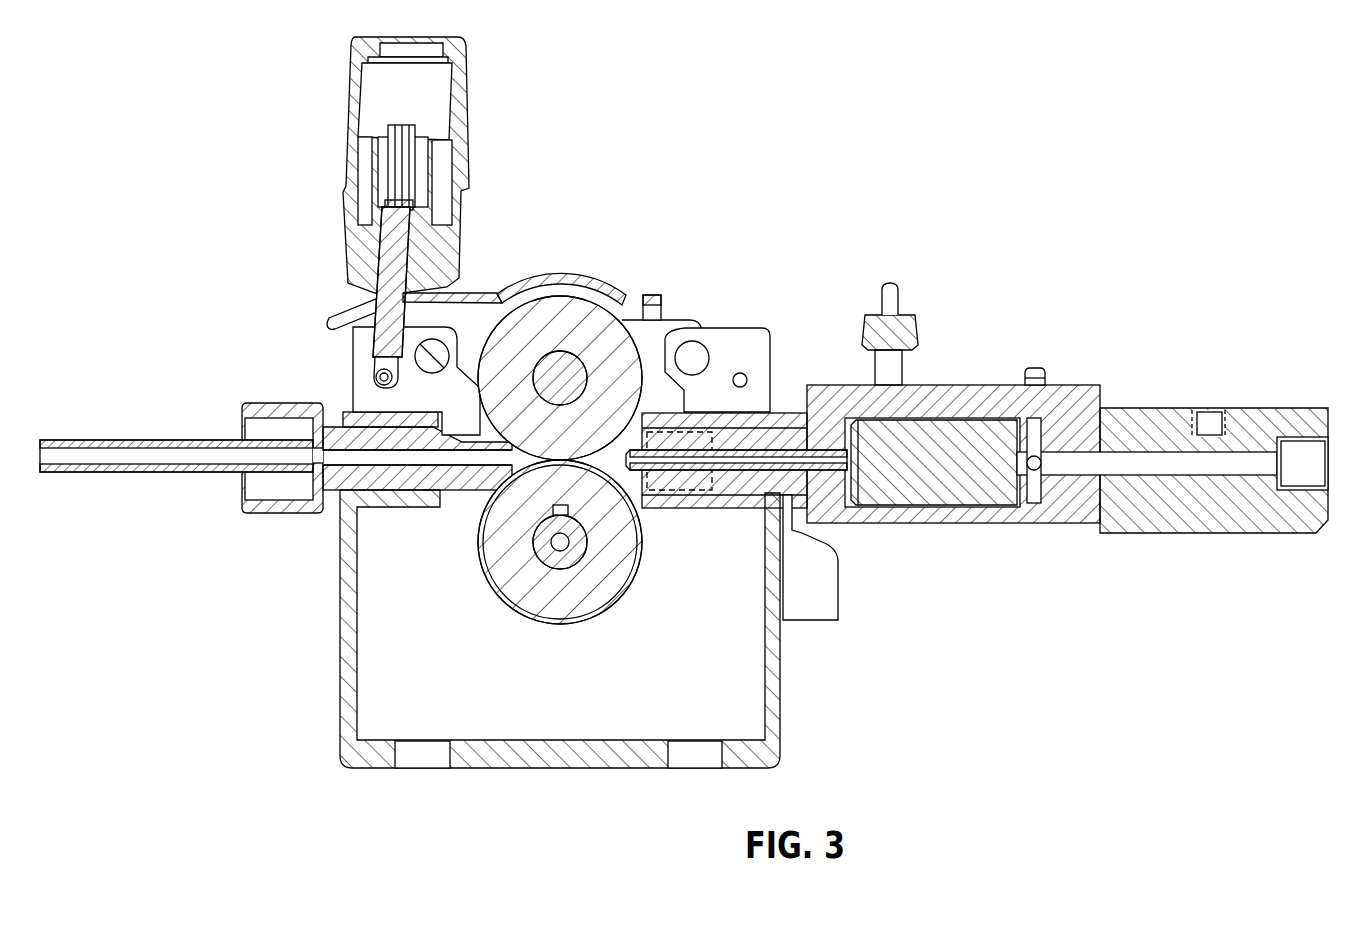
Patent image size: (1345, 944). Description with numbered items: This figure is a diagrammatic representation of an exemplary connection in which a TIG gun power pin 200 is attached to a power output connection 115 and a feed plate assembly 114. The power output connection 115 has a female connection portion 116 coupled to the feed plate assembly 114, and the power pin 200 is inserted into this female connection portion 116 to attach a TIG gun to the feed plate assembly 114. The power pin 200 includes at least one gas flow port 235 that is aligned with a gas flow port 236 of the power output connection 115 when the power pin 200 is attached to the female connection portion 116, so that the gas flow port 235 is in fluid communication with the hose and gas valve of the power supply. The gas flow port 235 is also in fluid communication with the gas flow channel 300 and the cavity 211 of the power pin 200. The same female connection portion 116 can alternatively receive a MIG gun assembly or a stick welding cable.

The feed plate assembly 114 is at (588, 273).
The power output connection 115 is at (958, 158).
The female connection portion 116 is at (968, 385).
The power pin 200 is at (1148, 408).
The cavity 211 is at (1300, 462).
The gas flow port 235 is at (1032, 503).
The gas flow port 236 is at (1036, 368).
The gas flow channel 300 is at (1188, 467).